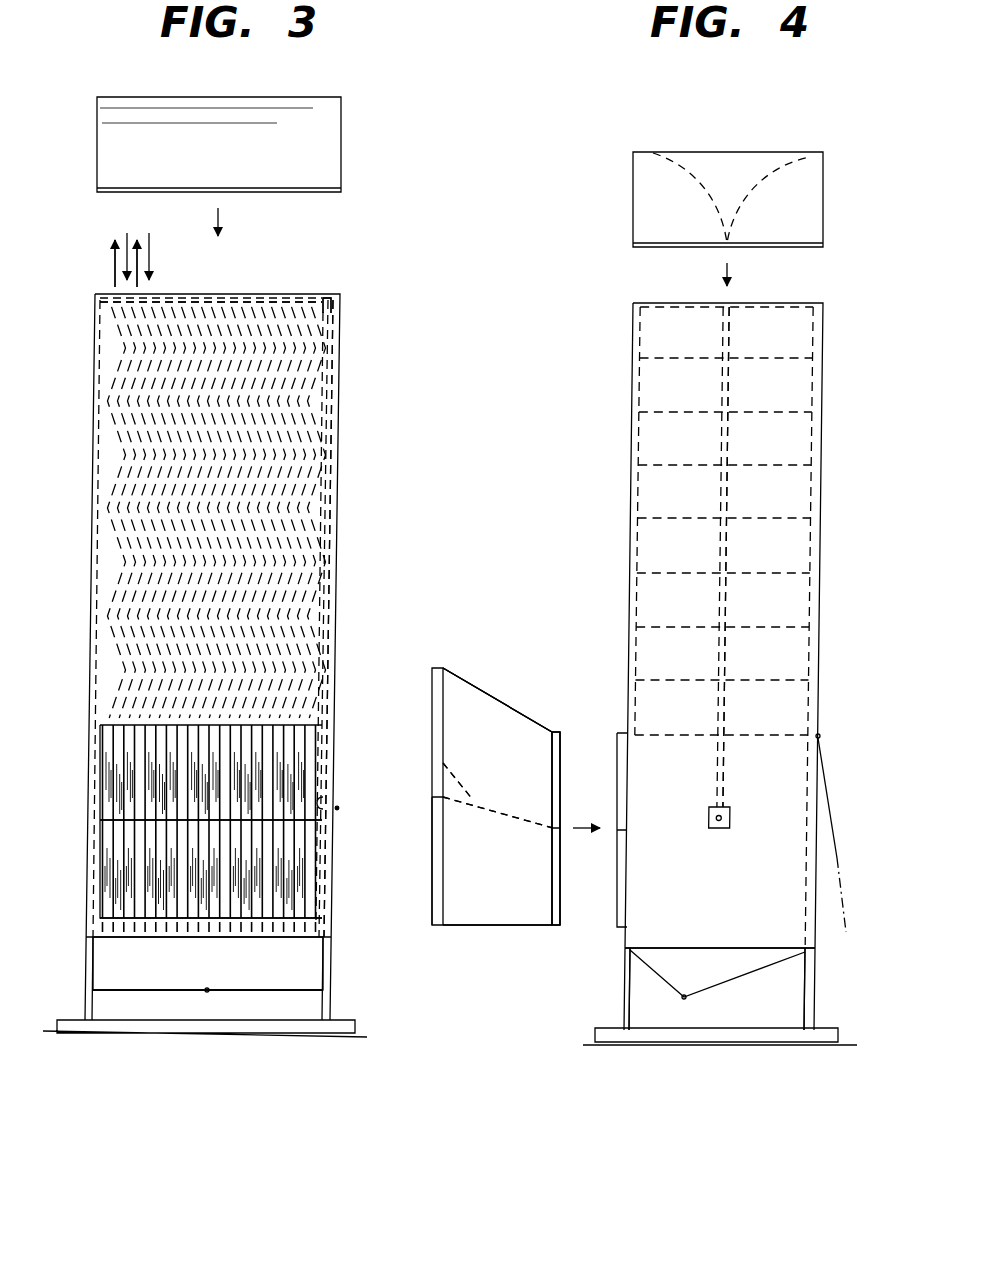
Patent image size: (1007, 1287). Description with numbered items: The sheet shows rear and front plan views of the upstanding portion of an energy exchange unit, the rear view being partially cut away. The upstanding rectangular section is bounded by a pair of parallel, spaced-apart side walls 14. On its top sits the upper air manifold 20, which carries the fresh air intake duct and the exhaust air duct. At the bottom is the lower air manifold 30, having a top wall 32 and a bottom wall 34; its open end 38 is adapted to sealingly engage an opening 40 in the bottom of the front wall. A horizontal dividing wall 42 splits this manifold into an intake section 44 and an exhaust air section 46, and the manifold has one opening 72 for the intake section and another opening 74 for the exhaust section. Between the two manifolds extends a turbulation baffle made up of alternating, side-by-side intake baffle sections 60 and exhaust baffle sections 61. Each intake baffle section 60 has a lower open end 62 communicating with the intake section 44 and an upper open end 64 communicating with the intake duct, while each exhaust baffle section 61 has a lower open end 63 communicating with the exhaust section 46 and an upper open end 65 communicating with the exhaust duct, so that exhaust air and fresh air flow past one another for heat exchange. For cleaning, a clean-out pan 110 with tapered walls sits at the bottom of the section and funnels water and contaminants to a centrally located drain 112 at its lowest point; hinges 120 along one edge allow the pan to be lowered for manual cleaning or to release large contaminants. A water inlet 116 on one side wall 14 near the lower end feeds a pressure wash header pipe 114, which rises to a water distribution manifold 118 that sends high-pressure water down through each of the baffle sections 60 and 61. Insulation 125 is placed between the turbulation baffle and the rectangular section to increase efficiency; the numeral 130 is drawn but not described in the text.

In FIG. 3, the side walls 14 is at (90, 527).
In FIG. 4, the upper air manifold 20 is at (727, 160).
In FIG. 4, the lower air manifold 30 is at (472, 695).
In FIG. 4, the top wall 32 is at (500, 698).
In FIG. 4, the bottom wall 34 is at (495, 927).
In FIG. 4, the open end 38 is at (558, 733).
In FIG. 4, the opening 40 is at (617, 842).
In FIG. 4, the dividing wall 42 is at (443, 763).
In FIG. 4, the intake section 44 is at (460, 733).
In FIG. 4, the exhaust air section 46 is at (460, 838).
In FIG. 3, the intake baffle sections 60 is at (175, 311).
In FIG. 3, the exhaust baffle sections 61 is at (163, 310).
In FIG. 3, the lower open ends 62 is at (180, 793).
In FIG. 3, the lower open ends 63 is at (170, 872).
In FIG. 3, the upper open ends 64 is at (175, 297).
In FIG. 3, the upper open ends 65 is at (158, 298).
In FIG. 4, the opening 72 is at (557, 783).
In FIG. 4, the opening 74 is at (553, 892).
In FIG. 3, the clean-out pan 110 is at (125, 977).
In FIG. 4, the clean-out pan 110 is at (725, 975).
In FIG. 3, the drain 112 is at (207, 990).
In FIG. 4, the drain 112 is at (684, 997).
In FIG. 3, the pressure wash header pipe 114 is at (335, 408).
In FIG. 4, the pressure wash header pipe 114 is at (730, 556).
In FIG. 3, the water inlet 116 is at (338, 810).
In FIG. 4, the water inlet 116 is at (720, 815).
In FIG. 3, the water distribution manifold 118 is at (323, 298).
In FIG. 4, the hinges 120 is at (803, 955).
In FIG. 4, the insulation 125 is at (822, 418).
In FIG. 4, the door swing path 130 is at (837, 858).